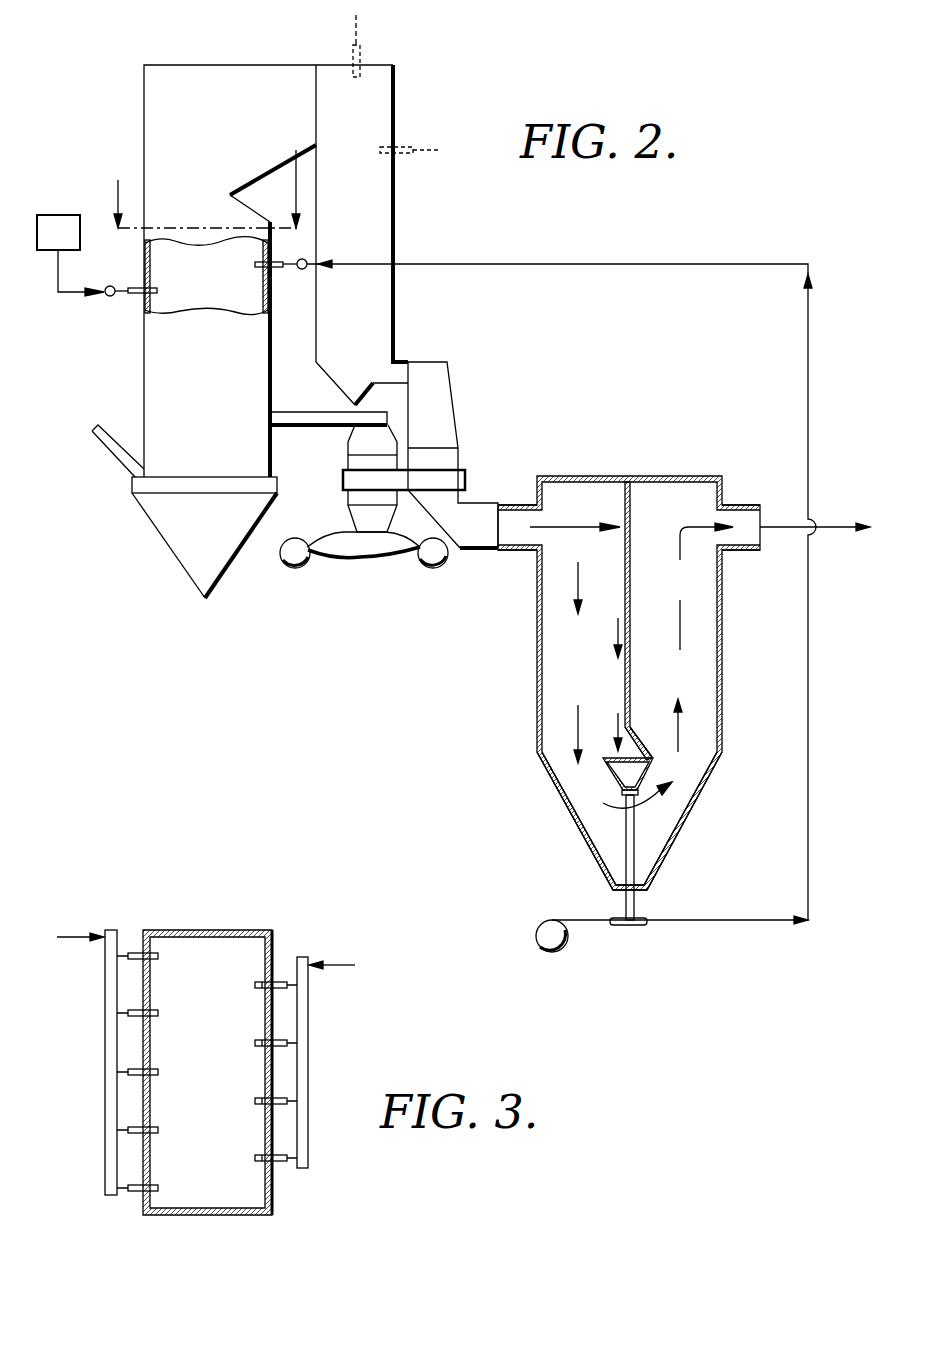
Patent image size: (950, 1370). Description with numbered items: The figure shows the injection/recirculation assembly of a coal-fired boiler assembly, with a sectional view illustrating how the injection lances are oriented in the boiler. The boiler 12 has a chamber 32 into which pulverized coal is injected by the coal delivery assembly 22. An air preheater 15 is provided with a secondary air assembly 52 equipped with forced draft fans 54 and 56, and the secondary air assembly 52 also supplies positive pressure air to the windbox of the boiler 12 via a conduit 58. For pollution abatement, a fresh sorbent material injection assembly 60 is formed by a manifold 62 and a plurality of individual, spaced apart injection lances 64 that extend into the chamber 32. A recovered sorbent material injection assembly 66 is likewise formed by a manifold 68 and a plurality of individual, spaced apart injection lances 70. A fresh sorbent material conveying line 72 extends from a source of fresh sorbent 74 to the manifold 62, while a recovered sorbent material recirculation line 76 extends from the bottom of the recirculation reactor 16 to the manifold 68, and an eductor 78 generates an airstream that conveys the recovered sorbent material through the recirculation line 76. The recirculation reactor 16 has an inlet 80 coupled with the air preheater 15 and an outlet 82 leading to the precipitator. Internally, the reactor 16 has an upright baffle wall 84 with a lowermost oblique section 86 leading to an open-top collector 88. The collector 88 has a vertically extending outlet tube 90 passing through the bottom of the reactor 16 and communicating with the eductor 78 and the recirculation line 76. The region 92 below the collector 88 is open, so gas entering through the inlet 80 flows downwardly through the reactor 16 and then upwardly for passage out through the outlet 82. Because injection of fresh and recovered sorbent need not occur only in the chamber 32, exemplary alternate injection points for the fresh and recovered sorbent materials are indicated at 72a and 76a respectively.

In FIG. 2, the boiler 12 is at (165, 413).
In FIG. 3, the boiler 12 is at (207, 1099).
In FIG. 2, the air preheater 15 is at (440, 383).
In FIG. 2, the recirculation reactor 16 is at (640, 669).
In FIG. 2, the coal delivery assembly 22 is at (100, 457).
In FIG. 2, the chamber 32 is at (187, 297).
In FIG. 3, the chamber 32 is at (207, 1072).
In FIG. 2, the secondary air assembly 52 is at (368, 529).
In FIG. 2, the forced draft fan 54 is at (293, 568).
In FIG. 2, the forced draft fan 56 is at (439, 566).
In FIG. 2, the conduit 58 is at (310, 412).
In FIG. 2, the fresh sorbent material injection assembly 60 is at (142, 306).
In FIG. 3, the fresh sorbent material injection assembly 60 is at (132, 1010).
In FIG. 2, the manifold 62 is at (110, 285).
In FIG. 3, the manifold 62 is at (110, 1102).
In FIG. 2, the injection lances 64 is at (148, 280).
In FIG. 3, the injection lances 64 is at (153, 1187).
In FIG. 2, the recovered sorbent material injection assembly 66 is at (293, 255).
In FIG. 3, the recovered sorbent material injection assembly 66 is at (304, 1034).
In FIG. 2, the manifold 68 is at (302, 270).
In FIG. 3, the manifold 68 is at (303, 1070).
In FIG. 2, the injection lances 70 is at (258, 268).
In FIG. 3, the injection lances 70 is at (258, 1041).
In FIG. 2, the fresh sorbent material conveying line 72 is at (65, 292).
In FIG. 2, the alternate fresh sorbent injection point 72a is at (355, 32).
In FIG. 2, the source of fresh sorbent 74 is at (63, 216).
In FIG. 2, the recovered sorbent material recirculation line 76 is at (640, 263).
In FIG. 2, the alternate recovered sorbent injection point 76a is at (427, 148).
In FIG. 2, the eductor 78 is at (547, 927).
In FIG. 2, the inlet 80 is at (513, 503).
In FIG. 2, the outlet 82 is at (742, 503).
In FIG. 2, the upright baffle wall 84 is at (630, 512).
In FIG. 2, the lowermost oblique section 86 is at (642, 742).
In FIG. 2, the open-top collector 88 is at (647, 772).
In FIG. 2, the outlet tube 90 is at (630, 840).
In FIG. 2, the region 92 is at (607, 828).